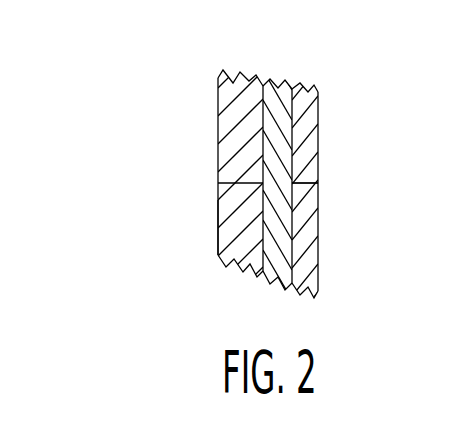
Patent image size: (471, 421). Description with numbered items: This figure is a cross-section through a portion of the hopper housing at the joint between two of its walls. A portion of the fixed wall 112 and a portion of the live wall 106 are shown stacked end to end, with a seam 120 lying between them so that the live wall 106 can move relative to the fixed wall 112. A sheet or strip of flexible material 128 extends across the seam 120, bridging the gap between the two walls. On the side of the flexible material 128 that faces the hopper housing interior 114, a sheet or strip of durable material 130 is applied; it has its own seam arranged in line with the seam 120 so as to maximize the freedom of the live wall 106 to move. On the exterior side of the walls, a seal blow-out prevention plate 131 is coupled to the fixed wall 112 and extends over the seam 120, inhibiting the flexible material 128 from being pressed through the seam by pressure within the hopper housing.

The live wall 106 is at (233, 132).
The fixed wall 112 is at (222, 245).
The hopper housing interior 114 is at (382, 147).
The seam 120 is at (218, 183).
The flexible material 128 is at (285, 88).
The durable material 130 is at (318, 108).
The seal blow-out prevention plate 131 is at (318, 183).